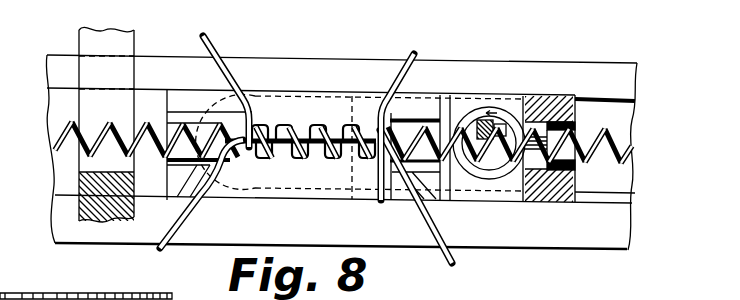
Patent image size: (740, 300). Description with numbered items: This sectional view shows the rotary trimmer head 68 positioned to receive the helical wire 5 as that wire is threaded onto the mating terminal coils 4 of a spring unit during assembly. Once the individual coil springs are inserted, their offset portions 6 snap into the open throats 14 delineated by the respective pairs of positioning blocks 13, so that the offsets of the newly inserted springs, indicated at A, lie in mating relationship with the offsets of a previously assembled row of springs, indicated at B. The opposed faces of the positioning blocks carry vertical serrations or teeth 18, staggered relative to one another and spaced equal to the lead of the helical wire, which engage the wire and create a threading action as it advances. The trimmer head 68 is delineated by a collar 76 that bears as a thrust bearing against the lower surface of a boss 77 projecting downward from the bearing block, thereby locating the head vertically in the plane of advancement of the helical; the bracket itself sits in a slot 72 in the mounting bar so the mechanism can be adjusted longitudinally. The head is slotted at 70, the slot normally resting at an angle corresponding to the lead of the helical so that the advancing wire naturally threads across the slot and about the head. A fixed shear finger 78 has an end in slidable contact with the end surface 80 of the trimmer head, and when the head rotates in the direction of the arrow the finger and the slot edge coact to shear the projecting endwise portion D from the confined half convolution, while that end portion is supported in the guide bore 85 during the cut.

The terminal coils 4 is at (221, 63).
The helical wire 5 is at (82, 127).
The offset portions 6 is at (285, 158).
The positioning blocks 13 is at (339, 108).
The open throats 14 is at (296, 130).
The vertical serrations or teeth 18 is at (268, 127).
The trimmer head 68 is at (510, 183).
The slot 70 is at (497, 120).
The slot 72 is at (292, 198).
The collar 76 is at (483, 180).
The boss 77 is at (458, 107).
The fixed shear finger 78 is at (475, 110).
The end surface 80 is at (512, 125).
The guide bore 85 is at (541, 160).
The offsets of newly inserted springs A is at (398, 62).
The offsets of previously assembled springs B is at (437, 240).
The projecting endwise portion D is at (610, 100).